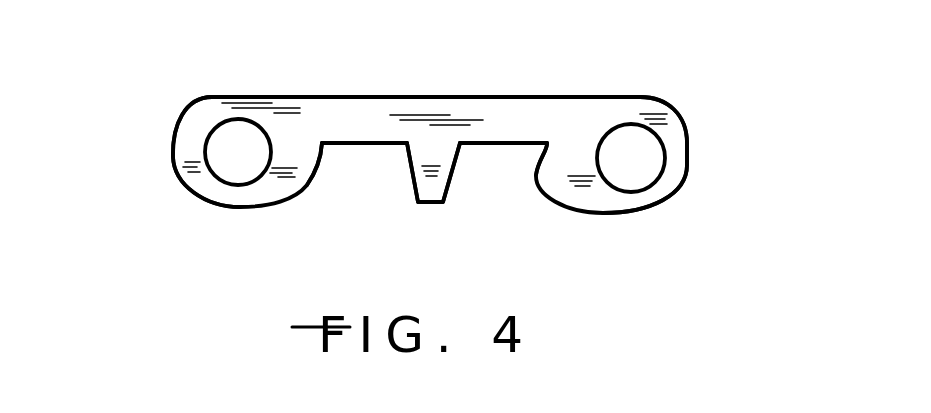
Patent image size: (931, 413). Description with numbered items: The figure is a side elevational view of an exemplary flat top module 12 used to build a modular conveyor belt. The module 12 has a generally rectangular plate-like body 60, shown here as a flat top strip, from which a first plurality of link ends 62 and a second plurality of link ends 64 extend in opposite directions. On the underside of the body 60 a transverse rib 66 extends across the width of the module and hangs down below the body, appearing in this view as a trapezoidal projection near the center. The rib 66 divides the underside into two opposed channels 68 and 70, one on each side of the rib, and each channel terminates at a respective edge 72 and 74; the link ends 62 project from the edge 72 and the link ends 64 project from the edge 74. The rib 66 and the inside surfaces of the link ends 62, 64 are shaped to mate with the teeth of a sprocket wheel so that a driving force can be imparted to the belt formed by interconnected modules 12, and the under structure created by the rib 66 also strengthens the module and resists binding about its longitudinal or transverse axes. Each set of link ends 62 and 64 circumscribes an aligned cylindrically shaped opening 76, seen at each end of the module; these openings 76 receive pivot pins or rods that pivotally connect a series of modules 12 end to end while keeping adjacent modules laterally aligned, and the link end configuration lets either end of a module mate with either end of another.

The flat top module 12 is at (692, 95).
The plate-like body 60 is at (375, 103).
The first plurality of link ends 62 is at (678, 148).
The second plurality of link ends 64 is at (185, 140).
The transverse rib 66 is at (432, 190).
The channel 68 is at (508, 145).
The channel 70 is at (364, 145).
The edge 72 is at (540, 160).
The edge 74 is at (318, 168).
The cylindrically shaped openings 76 is at (220, 158).